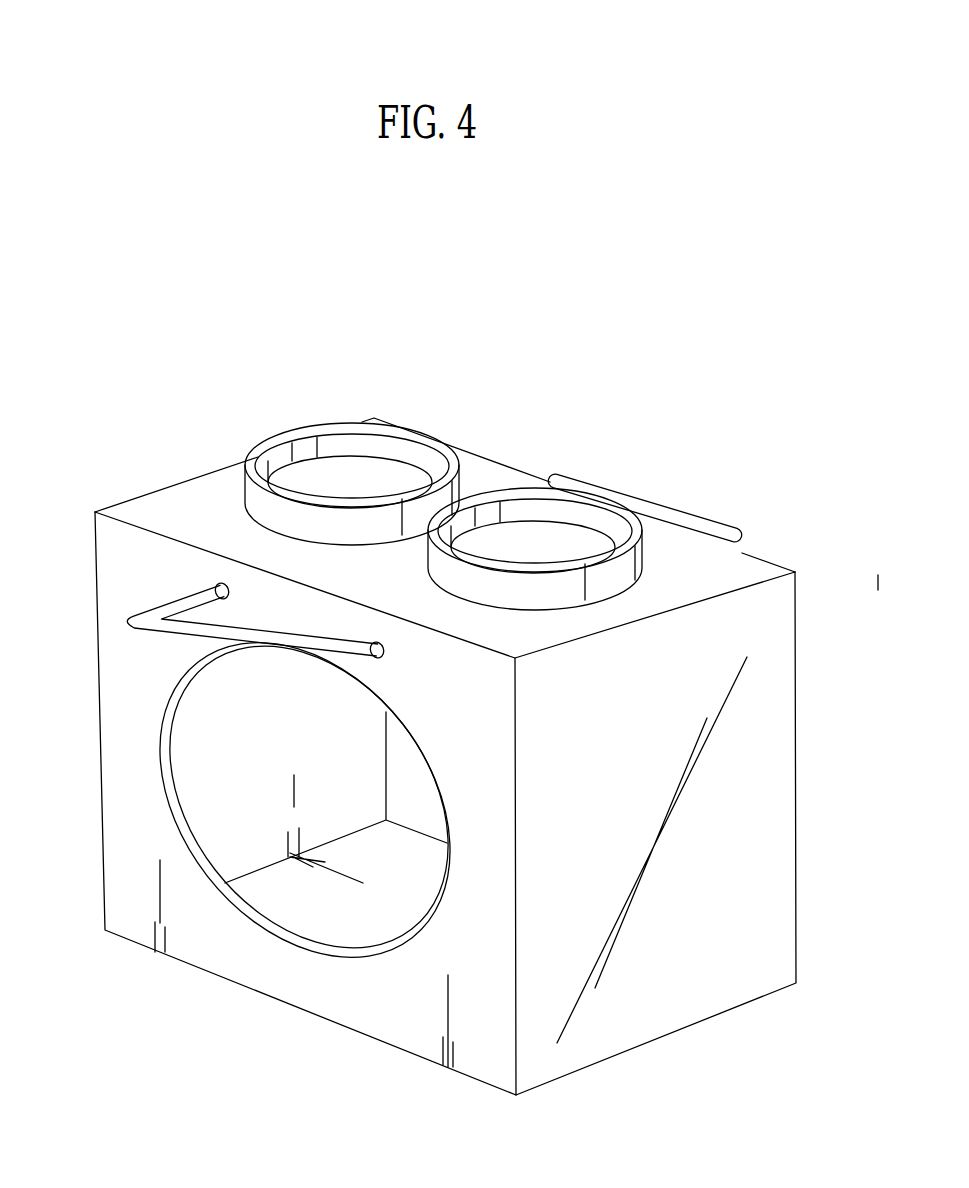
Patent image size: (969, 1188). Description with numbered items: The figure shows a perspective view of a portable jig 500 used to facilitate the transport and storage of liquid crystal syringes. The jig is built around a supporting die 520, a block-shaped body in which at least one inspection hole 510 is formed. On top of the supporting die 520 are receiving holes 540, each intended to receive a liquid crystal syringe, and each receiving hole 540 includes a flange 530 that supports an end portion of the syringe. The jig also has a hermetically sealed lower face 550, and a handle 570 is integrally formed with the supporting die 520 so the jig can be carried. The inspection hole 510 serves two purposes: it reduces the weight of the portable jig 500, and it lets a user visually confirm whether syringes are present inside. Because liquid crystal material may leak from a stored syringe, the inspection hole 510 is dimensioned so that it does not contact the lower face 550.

The portable jig 500 is at (778, 504).
The inspection hole 510 is at (226, 810).
The supporting die 520 is at (113, 747).
The flange 530 is at (428, 448).
The receiving hole 540 is at (351, 470).
The lower face 550 is at (332, 928).
The handle 570 is at (150, 622).